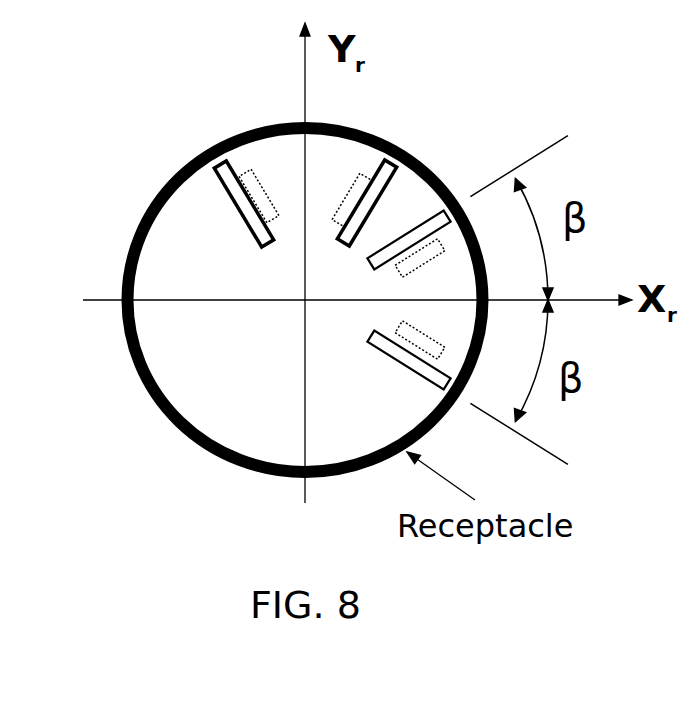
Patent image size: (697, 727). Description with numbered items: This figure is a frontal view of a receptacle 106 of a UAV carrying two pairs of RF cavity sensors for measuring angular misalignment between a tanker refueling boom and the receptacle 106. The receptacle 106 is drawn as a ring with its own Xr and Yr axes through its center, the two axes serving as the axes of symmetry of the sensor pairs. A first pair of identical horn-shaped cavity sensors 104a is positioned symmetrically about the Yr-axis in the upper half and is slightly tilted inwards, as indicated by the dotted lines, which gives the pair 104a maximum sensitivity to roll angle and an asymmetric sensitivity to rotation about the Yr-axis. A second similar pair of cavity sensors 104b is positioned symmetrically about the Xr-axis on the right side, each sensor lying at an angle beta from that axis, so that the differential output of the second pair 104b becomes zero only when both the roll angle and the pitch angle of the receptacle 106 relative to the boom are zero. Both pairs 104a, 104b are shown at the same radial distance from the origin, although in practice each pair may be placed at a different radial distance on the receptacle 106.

The receptacle 106 is at (133, 197).
The first cavity sensor pair 104a is at (230, 229).
The second cavity sensor pair 104b is at (411, 204).